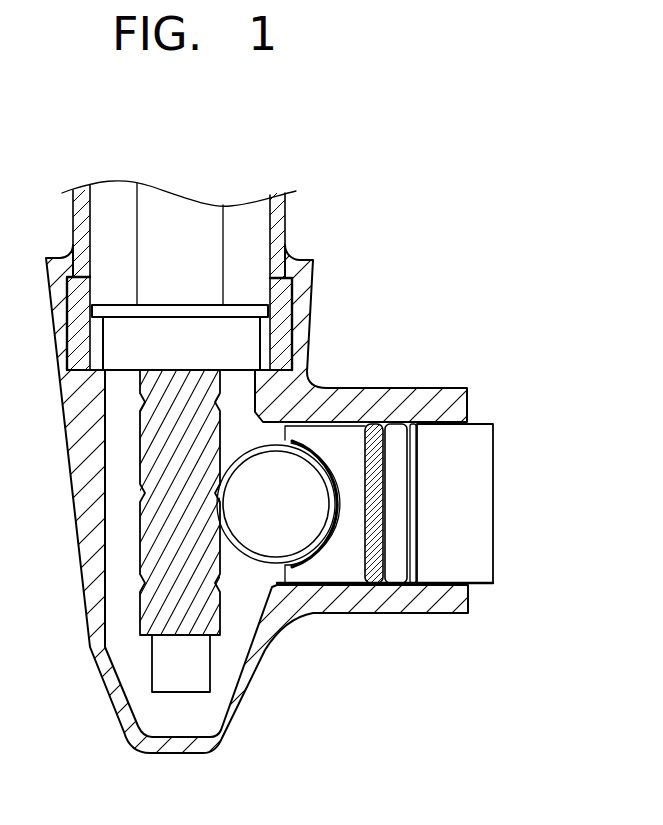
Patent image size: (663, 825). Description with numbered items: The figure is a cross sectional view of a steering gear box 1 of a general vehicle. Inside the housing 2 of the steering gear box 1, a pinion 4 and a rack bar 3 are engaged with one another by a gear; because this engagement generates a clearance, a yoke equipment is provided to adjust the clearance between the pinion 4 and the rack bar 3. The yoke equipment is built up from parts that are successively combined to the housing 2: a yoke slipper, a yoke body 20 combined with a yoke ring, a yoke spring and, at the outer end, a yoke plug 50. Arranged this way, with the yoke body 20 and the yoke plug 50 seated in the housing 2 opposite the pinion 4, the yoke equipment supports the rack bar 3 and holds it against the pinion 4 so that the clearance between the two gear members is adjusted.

The steering gear box 1 is at (404, 299).
The housing 2 is at (423, 602).
The rack bar 3 is at (288, 517).
The pinion 4 is at (158, 602).
The yoke body 20 is at (341, 567).
The yoke plug 50 is at (475, 518).